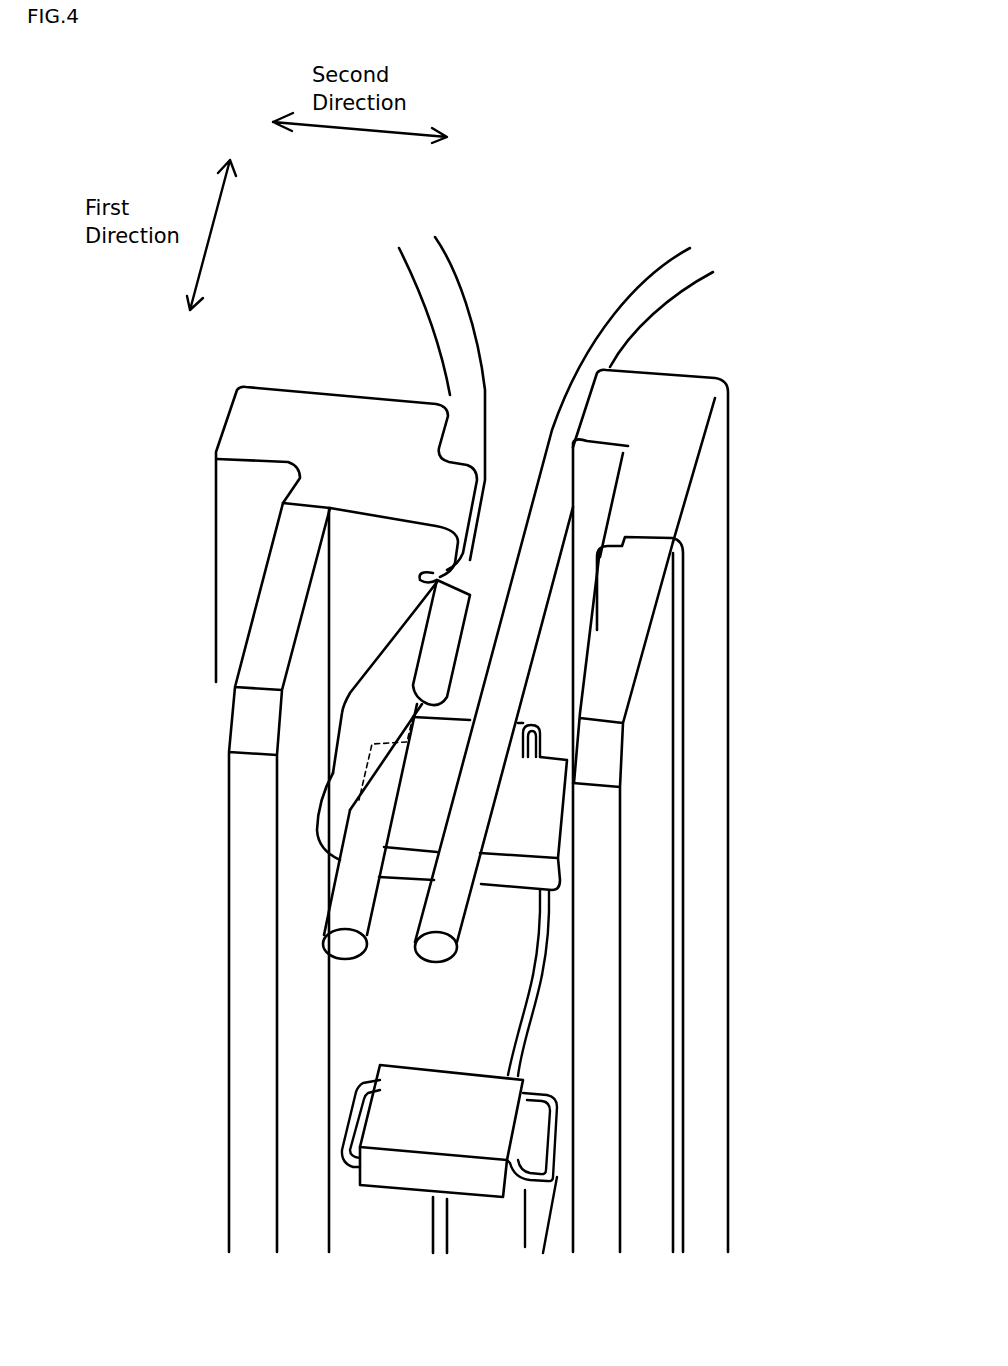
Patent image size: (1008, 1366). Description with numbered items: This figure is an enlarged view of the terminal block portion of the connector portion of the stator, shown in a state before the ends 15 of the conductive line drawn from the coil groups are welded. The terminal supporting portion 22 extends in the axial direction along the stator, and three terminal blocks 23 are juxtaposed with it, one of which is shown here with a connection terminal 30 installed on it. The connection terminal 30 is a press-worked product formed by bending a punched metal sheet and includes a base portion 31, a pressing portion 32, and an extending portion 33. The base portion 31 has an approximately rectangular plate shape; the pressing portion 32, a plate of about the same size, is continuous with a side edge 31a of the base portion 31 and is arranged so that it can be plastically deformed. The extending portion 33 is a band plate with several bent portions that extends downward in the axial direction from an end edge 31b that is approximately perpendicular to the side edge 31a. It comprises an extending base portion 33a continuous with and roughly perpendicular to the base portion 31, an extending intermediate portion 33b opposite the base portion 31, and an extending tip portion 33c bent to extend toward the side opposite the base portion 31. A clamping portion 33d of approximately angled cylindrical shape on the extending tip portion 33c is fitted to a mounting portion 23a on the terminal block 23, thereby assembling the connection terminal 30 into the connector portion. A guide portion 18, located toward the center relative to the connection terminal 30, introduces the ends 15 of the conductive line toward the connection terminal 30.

The end of the conductive line 15 is at (607, 337).
The guide portion 18 is at (417, 573).
The terminal supporting portion 22 is at (260, 957).
The terminal block 23 is at (294, 1091).
The mounting portion 23a is at (400, 1175).
The connection terminal 30 is at (295, 826).
The base portion 31 is at (533, 827).
The side edge 31a is at (365, 782).
The end edge 31b is at (553, 748).
The pressing portion 32 is at (385, 681).
The extending portion 33 is at (614, 1071).
The extending base portion 33a is at (510, 905).
The extending intermediate portion 33b is at (500, 990).
The extending tip portion 33c is at (493, 1050).
The clamping portion 33d is at (483, 1175).